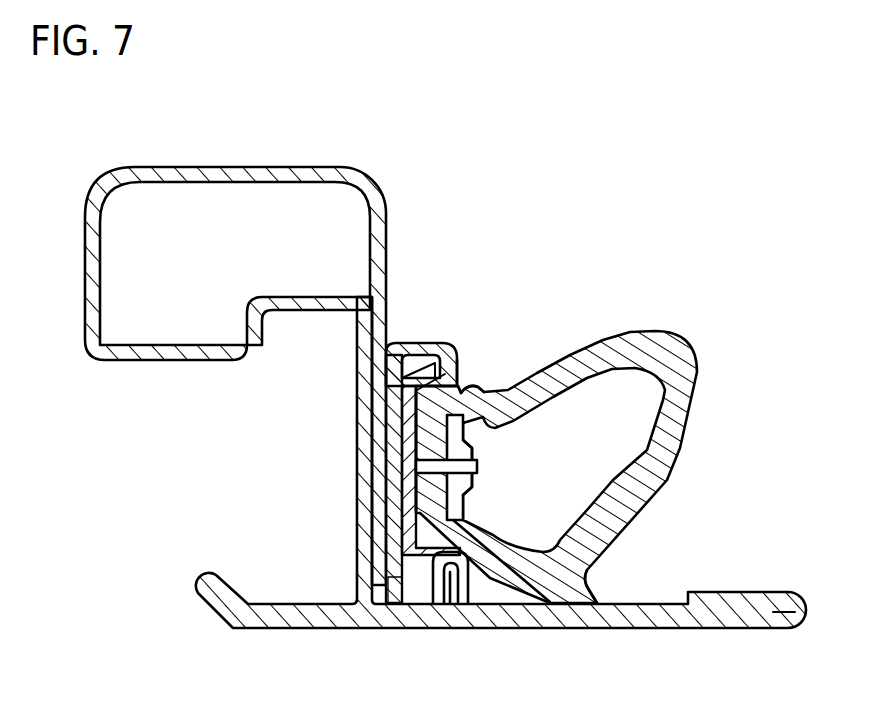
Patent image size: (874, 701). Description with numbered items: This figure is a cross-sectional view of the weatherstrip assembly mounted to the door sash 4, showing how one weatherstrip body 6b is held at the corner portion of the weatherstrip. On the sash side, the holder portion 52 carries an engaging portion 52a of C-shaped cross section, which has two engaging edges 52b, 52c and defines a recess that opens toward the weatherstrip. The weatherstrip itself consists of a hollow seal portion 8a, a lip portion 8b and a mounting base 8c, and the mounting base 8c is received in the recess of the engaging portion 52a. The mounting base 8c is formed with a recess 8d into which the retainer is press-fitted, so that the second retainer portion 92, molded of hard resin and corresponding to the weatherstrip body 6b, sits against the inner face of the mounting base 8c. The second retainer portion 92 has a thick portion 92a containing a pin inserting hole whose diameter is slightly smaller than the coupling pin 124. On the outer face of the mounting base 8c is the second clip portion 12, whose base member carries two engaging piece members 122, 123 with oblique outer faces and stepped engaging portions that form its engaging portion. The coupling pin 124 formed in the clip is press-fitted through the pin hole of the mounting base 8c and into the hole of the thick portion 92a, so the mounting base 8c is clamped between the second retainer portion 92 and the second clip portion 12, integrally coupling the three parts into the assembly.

The door sash 4 is at (380, 187).
The weatherstrip body 6b is at (715, 376).
The hollow seal portion 8a is at (647, 330).
The lip portion 8b is at (597, 600).
The mounting base 8c is at (425, 426).
The recess 8d is at (483, 392).
The second clip portion 12 is at (395, 483).
The engaging piece member 122 is at (398, 568).
The engaging piece member 123 is at (403, 345).
The coupling pin 124 is at (481, 462).
The holder portion 52 is at (460, 325).
The engaging portion 52a is at (423, 348).
The engaging edge 52b is at (458, 580).
The engaging edge 52c is at (445, 367).
The second retainer portion 92 is at (463, 510).
The thick portion 92a is at (474, 478).